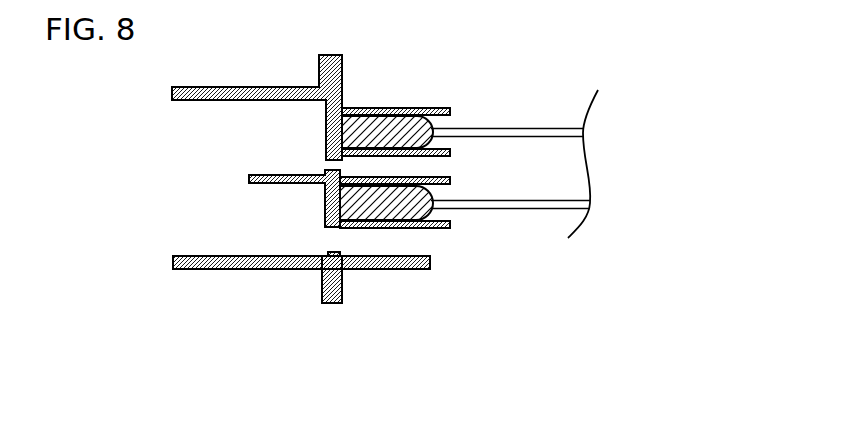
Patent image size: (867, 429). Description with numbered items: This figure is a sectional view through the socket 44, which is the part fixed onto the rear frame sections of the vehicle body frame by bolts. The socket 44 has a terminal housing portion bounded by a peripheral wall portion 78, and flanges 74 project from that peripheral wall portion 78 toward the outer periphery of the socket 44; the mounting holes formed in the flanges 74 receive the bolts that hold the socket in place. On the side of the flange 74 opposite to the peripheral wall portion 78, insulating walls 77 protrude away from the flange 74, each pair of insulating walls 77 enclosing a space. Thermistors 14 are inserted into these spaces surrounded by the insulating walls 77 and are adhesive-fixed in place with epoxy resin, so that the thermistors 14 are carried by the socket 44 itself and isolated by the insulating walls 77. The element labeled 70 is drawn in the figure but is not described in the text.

The peripheral wall portion 78 is at (192, 86).
The insulating walls 77 is at (388, 107).
The thermistors 14 is at (433, 190).
The intermediate support plate 70 is at (303, 185).
The socket 44 is at (224, 281).
The flanges 74 is at (322, 287).